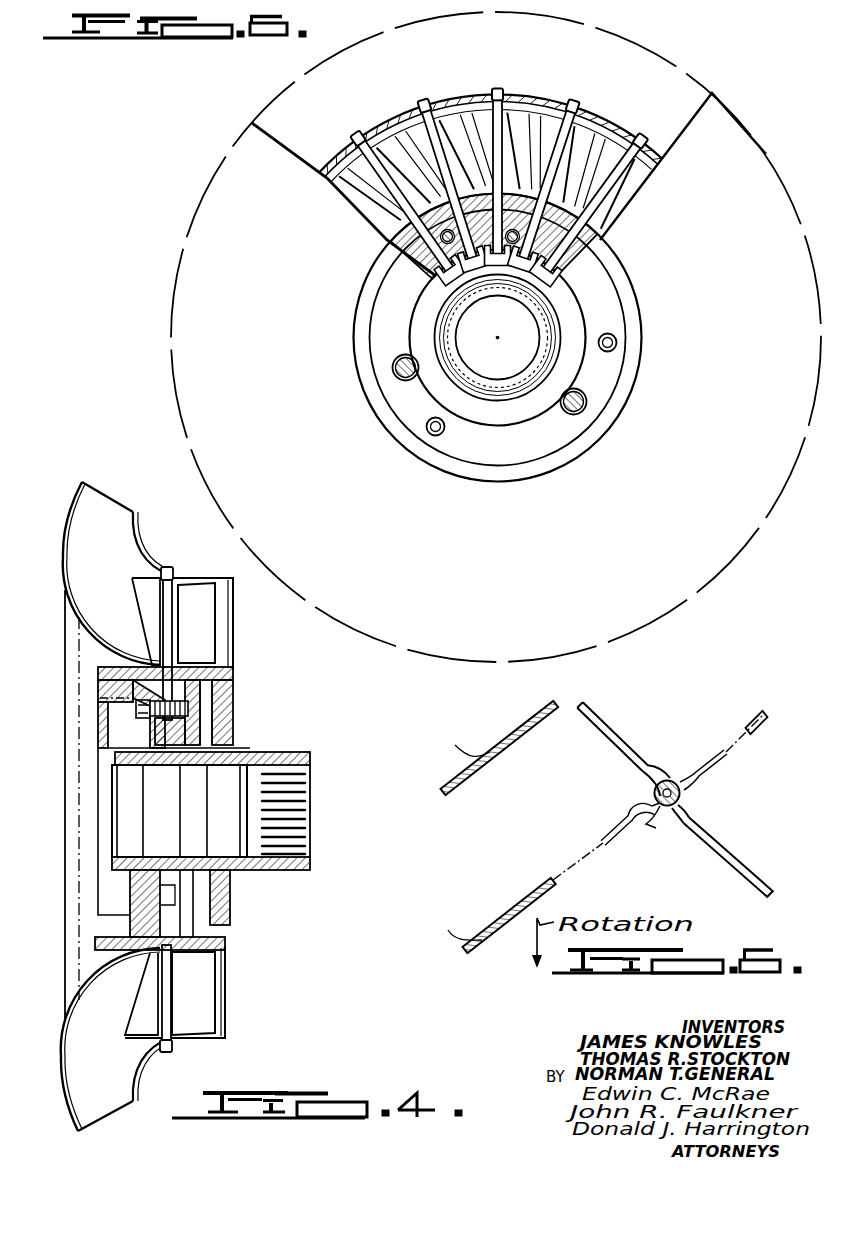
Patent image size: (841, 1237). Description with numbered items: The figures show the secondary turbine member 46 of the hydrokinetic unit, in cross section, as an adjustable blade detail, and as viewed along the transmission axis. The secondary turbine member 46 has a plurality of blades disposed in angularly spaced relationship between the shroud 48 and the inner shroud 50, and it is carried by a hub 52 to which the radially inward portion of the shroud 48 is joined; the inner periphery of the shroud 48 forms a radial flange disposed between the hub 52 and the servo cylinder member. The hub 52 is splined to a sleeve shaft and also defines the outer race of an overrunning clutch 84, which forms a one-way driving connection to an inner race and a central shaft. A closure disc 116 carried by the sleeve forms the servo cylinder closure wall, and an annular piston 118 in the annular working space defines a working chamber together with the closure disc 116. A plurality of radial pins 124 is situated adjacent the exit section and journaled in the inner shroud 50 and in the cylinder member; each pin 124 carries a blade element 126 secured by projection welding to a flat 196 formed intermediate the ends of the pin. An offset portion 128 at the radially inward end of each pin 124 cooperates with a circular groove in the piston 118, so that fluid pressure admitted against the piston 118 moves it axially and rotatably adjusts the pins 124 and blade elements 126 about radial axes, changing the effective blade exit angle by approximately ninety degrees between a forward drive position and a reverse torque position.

In FIG. 4, the secondary turbine member 46 is at (118, 558).
In FIG. 5, the secondary turbine member 46 is at (555, 863).
In FIG. 4, the shroud 48 is at (83, 630).
In FIG. 6, the inner shroud 50 is at (491, 123).
In FIG. 4, the inner shroud 50 is at (148, 572).
In FIG. 4, the hub 52 is at (135, 688).
In FIG. 4, the overrunning clutch 84 is at (115, 718).
In FIG. 4, the closure disc 116 is at (195, 710).
In FIG. 4, the annular piston 118 is at (195, 722).
In FIG. 6, the radial pins 124 is at (533, 171).
In FIG. 4, the radial pins 124 is at (172, 677).
In FIG. 5, the radial pins 124 is at (656, 791).
In FIG. 6, the blade elements 126 is at (492, 159).
In FIG. 4, the blade elements 126 is at (198, 615).
In FIG. 5, the blade elements 126 is at (598, 727).
In FIG. 6, the offset portion 128 is at (498, 338).
In FIG. 4, the offset portion 128 is at (190, 740).
In FIG. 5, the offset portion 128 is at (670, 812).
In FIG. 5, the flat 196 is at (684, 799).